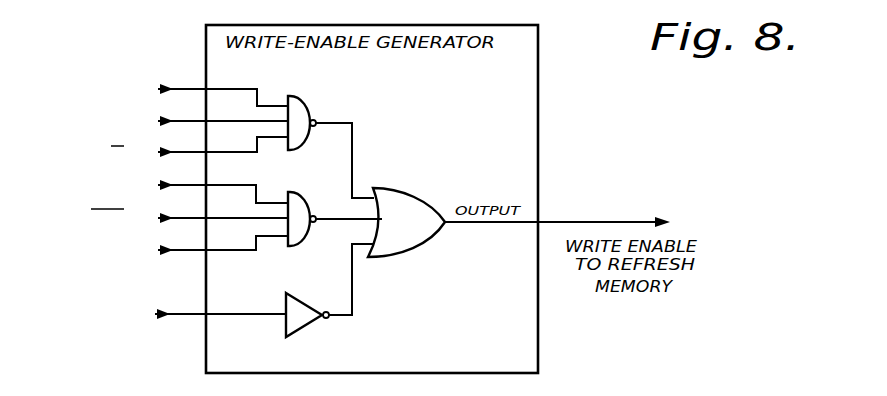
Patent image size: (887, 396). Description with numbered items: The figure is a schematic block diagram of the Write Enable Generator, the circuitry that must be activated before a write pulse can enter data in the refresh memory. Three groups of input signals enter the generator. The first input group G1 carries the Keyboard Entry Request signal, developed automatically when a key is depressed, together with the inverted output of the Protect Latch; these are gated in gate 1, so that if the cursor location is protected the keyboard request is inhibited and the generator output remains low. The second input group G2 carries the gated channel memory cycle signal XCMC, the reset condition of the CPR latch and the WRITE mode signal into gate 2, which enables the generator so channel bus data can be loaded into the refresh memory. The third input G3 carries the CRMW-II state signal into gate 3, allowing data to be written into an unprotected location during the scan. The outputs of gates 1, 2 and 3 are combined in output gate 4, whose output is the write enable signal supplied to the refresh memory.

The gate 1 is at (331, 147).
The gate No. 2 is at (335, 219).
The gate 3 is at (330, 290).
The gate 4 is at (519, 222).
The gate input group G1 is at (159, 116).
The gate input group G2 is at (174, 214).
The gate input group G3 is at (166, 310).